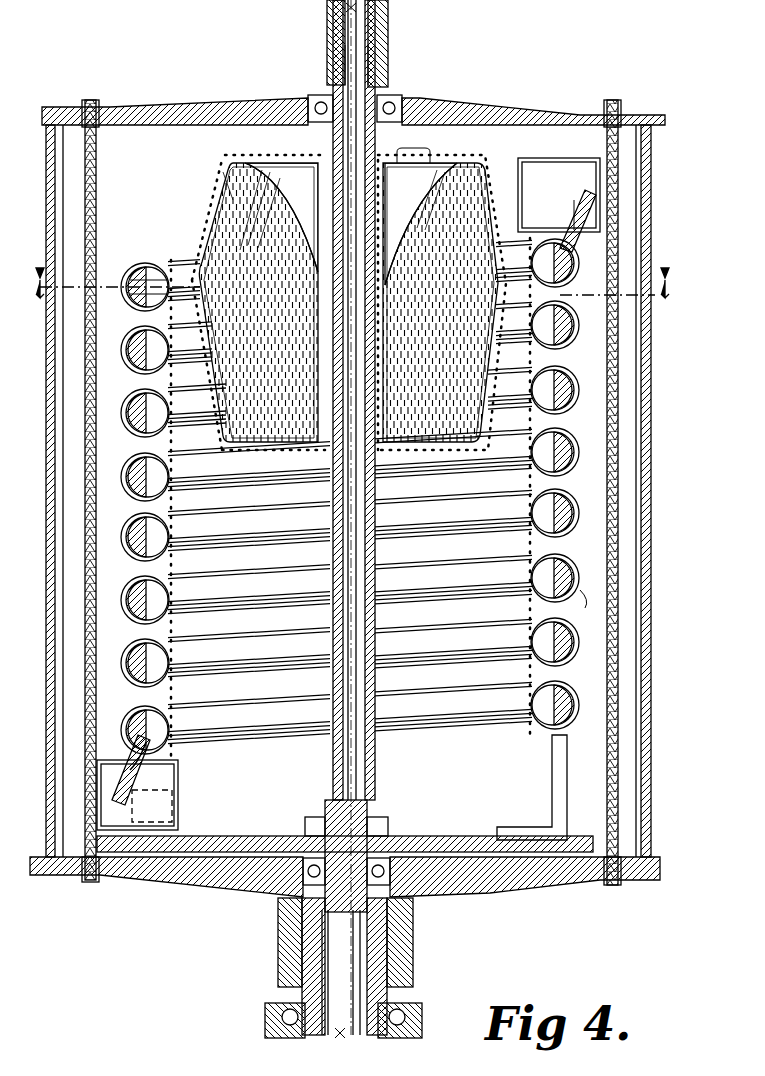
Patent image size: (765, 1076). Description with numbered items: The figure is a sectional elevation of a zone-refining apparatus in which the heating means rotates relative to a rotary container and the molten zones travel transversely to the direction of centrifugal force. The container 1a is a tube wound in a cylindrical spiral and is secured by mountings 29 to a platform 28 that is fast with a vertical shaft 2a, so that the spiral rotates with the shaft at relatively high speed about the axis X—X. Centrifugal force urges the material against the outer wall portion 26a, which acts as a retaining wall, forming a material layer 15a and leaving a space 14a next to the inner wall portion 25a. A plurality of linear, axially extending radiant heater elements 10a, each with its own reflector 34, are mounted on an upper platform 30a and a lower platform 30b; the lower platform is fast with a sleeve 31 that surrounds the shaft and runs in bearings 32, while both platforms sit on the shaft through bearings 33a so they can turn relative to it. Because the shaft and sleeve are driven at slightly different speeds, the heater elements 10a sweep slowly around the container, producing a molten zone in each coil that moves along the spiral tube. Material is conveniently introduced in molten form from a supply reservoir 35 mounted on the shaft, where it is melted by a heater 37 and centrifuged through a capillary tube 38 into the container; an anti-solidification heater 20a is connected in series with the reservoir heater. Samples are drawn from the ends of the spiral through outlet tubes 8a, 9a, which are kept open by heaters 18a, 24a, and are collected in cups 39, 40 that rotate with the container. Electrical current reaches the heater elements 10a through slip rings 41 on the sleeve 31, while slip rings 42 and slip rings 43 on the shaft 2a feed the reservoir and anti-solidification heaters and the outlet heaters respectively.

The container 1a is at (580, 588).
The shaft 2a is at (372, 658).
The outlet tube 8a is at (565, 215).
The outlet tube 9a is at (118, 830).
The radiant heater element 10a is at (97, 150).
The space 14a is at (157, 543).
The material layer 15a is at (128, 592).
The heater 18a is at (572, 185).
The anti-solidification heater 20a is at (180, 478).
The heater 24a is at (130, 793).
The inner wall portion 25a is at (535, 568).
The outer wall portion 26a is at (576, 700).
The platform 28 is at (440, 838).
The mounting 29 is at (552, 776).
The platform 30a is at (480, 110).
The platform 30b is at (540, 875).
The sleeve 31 is at (388, 950).
The bearing 32 is at (415, 1022).
The bearing 33a is at (392, 103).
The reflector 34 is at (55, 242).
The supply reservoir 35 is at (245, 160).
The heater 37 is at (218, 198).
The capillary tube 38 is at (180, 280).
The cup 39 is at (576, 232).
The cup 40 is at (110, 762).
The slip ring 41 is at (278, 968).
The slip ring 42 is at (330, 74).
The slip ring 43 is at (388, 48).